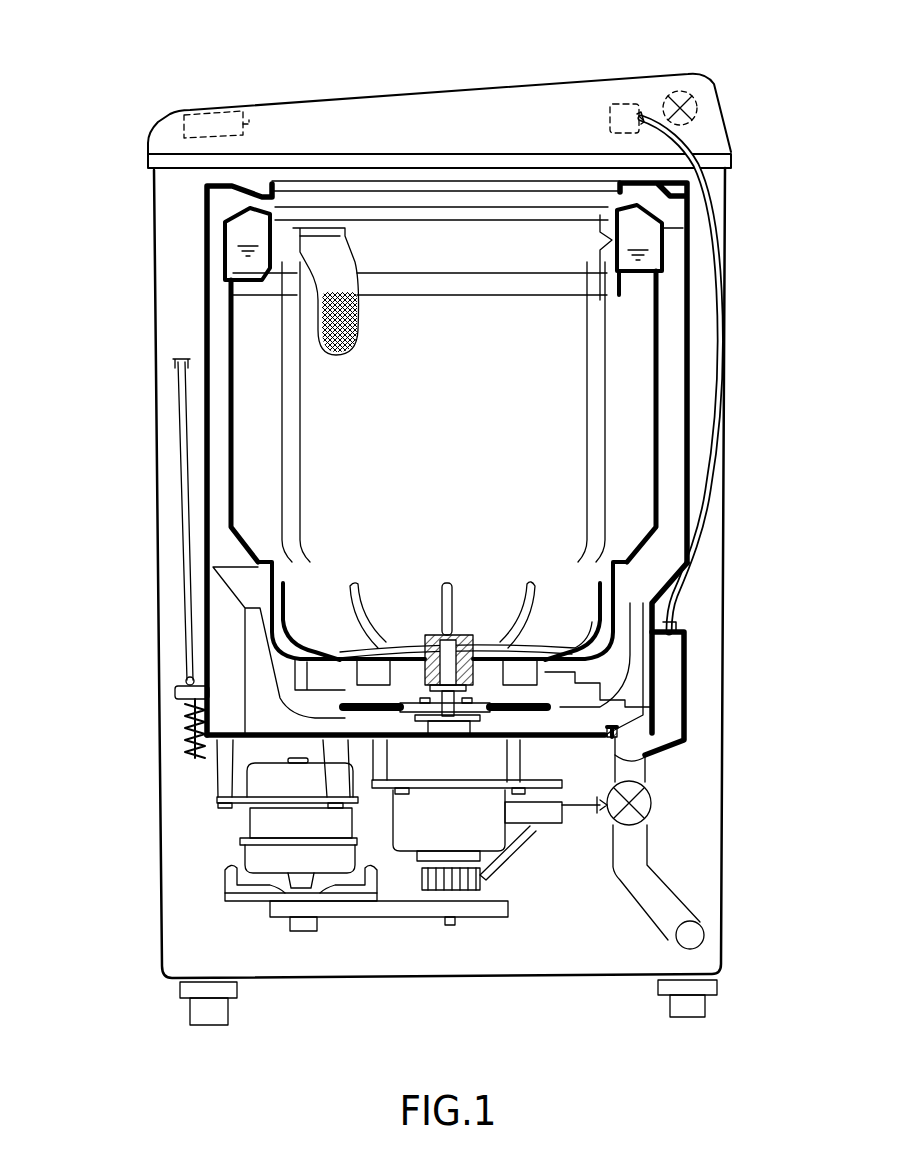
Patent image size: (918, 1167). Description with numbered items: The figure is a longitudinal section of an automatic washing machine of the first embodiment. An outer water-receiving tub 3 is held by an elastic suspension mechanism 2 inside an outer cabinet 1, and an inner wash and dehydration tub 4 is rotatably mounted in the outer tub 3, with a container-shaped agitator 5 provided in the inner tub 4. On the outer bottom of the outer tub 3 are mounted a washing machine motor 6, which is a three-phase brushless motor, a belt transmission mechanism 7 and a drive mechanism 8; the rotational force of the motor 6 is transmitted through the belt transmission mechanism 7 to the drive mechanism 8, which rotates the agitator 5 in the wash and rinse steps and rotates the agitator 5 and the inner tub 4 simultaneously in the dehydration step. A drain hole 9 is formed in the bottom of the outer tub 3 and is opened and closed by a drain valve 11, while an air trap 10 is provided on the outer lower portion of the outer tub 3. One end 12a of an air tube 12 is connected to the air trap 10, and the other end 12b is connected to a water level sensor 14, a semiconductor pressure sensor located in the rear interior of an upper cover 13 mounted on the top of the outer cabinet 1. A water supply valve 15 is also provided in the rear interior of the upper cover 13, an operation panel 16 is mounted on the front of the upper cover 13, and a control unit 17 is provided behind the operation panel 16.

The outer cabinet 1 is at (157, 569).
The elastic suspension mechanism 2 is at (188, 632).
The outer water-receiving tub 3 is at (200, 450).
The inner wash and dehydration tub 4 is at (235, 453).
The agitator 5 is at (383, 570).
The washing machine motor 6 is at (250, 824).
The belt transmission mechanism 7 is at (356, 917).
The drive mechanism 8 is at (524, 845).
The drain hole 9 is at (608, 740).
The air trap 10 is at (670, 672).
The drain valve 11 is at (652, 800).
The air tube 12 is at (720, 495).
The one end of the air tube 12a is at (672, 621).
The other end of the air tube 12b is at (644, 116).
The upper cover 13 is at (462, 96).
The water level sensor 14 is at (621, 104).
The water supply valve 15 is at (700, 97).
The operation panel 16 is at (212, 113).
The control unit 17 is at (249, 124).